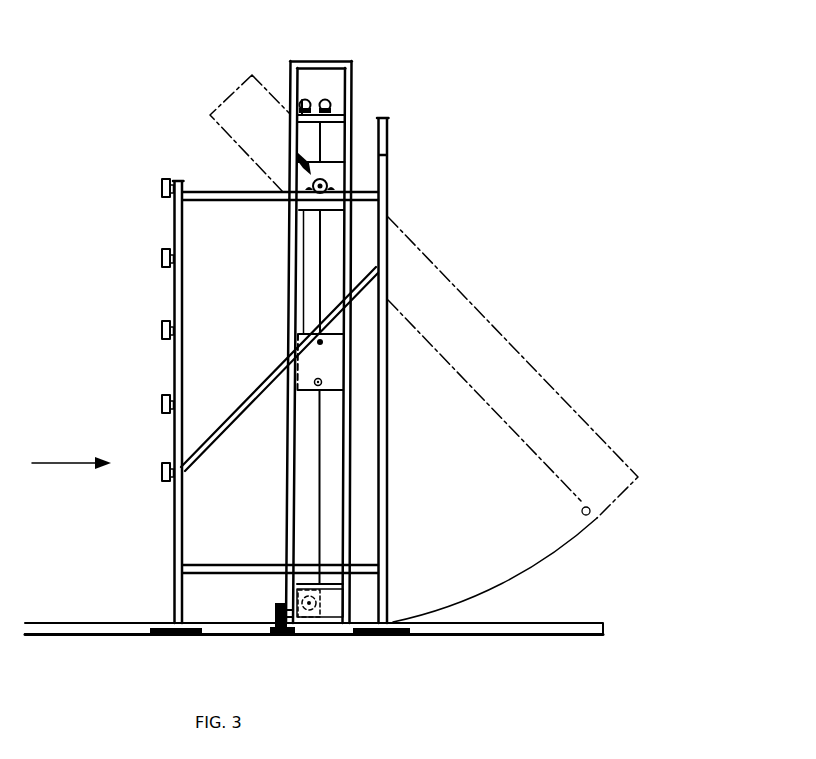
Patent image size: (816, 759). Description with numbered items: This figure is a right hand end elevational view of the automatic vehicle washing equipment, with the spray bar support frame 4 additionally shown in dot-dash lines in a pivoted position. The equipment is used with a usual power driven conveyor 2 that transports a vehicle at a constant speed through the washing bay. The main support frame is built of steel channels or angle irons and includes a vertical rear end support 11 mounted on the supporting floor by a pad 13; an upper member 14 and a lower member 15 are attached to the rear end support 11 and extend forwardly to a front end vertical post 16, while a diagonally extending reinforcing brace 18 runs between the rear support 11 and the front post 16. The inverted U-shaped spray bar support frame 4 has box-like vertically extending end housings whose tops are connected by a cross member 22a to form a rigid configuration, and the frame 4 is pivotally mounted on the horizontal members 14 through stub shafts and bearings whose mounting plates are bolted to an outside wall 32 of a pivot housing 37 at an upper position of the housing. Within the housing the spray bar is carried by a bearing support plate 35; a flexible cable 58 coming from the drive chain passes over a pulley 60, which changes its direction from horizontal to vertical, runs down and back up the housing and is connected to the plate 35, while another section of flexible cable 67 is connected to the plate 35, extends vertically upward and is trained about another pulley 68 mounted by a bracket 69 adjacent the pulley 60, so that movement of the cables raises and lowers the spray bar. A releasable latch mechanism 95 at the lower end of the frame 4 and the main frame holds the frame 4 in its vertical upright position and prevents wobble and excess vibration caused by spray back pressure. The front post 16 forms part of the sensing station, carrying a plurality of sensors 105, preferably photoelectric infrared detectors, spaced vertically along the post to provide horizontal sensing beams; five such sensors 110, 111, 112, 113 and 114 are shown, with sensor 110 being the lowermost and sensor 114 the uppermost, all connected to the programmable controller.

The power driven conveyor 2 is at (588, 631).
The spray bar support frame 4 is at (590, 412).
The vertical rear end support 11 is at (385, 153).
The pad 13 is at (401, 634).
The upper member 14 is at (236, 202).
The lower member 15 is at (232, 566).
The front end vertical post 16 is at (174, 296).
The diagonally extending reinforcing brace 18 is at (268, 373).
The cross member 22a is at (318, 62).
The outside wall 32 is at (337, 176).
The bearing support plate 35 is at (333, 378).
The pivot housing 37 is at (300, 158).
The flexible cable 58 is at (297, 257).
The pulley 60 is at (301, 100).
The flexible cable section 67 is at (317, 285).
The pulley 68 is at (323, 100).
The bracket 69 is at (333, 110).
The releasable latch mechanism 95 is at (260, 612).
The sensors 105 is at (148, 344).
The sensor 110 is at (161, 475).
The sensor 111 is at (158, 404).
The sensor 112 is at (161, 332).
The sensor 113 is at (161, 257).
The sensor 114 is at (161, 187).